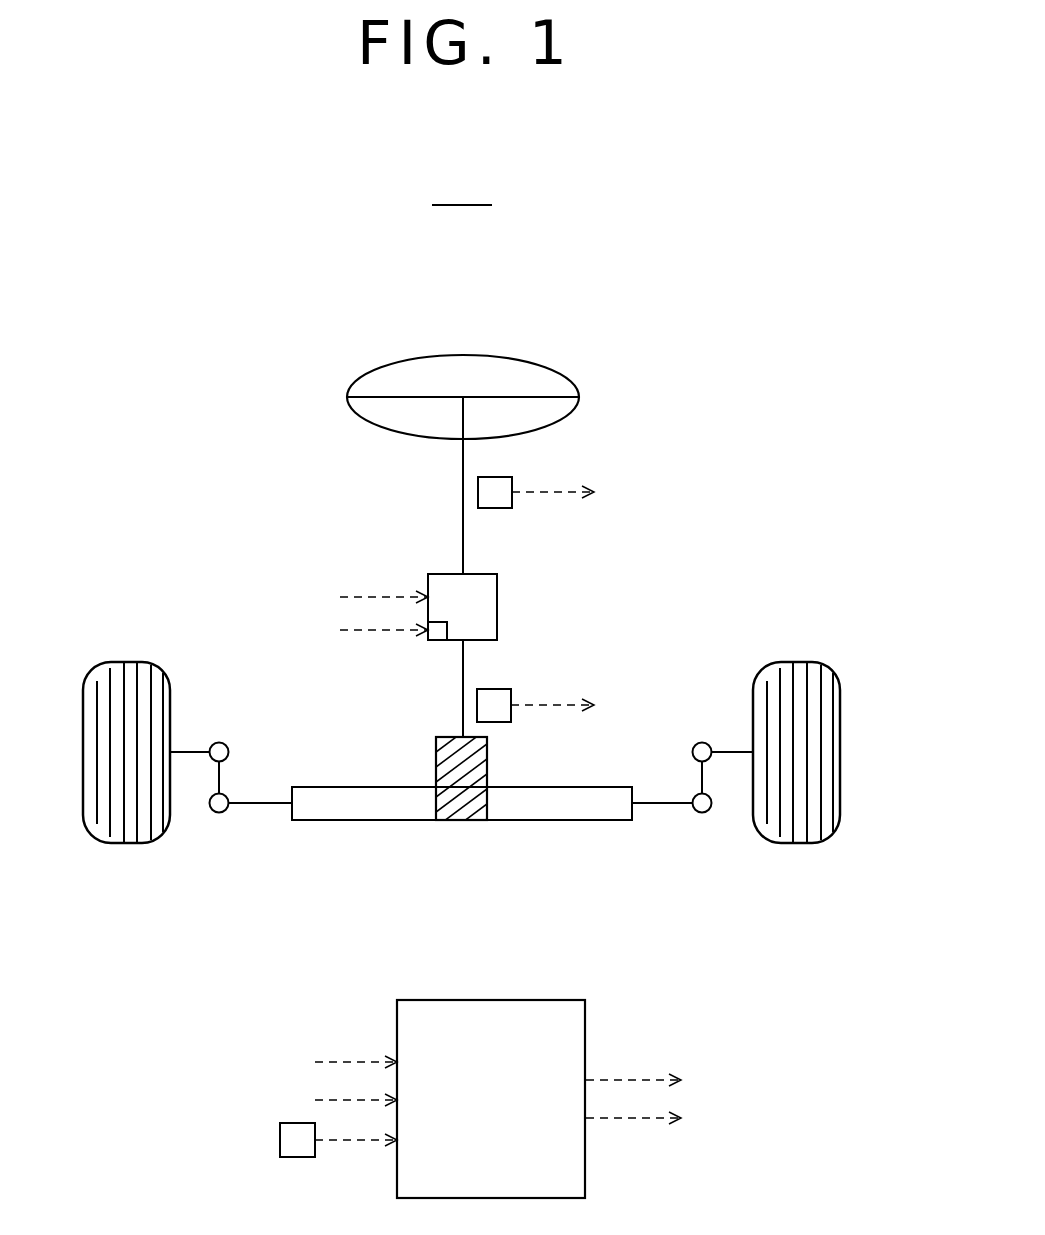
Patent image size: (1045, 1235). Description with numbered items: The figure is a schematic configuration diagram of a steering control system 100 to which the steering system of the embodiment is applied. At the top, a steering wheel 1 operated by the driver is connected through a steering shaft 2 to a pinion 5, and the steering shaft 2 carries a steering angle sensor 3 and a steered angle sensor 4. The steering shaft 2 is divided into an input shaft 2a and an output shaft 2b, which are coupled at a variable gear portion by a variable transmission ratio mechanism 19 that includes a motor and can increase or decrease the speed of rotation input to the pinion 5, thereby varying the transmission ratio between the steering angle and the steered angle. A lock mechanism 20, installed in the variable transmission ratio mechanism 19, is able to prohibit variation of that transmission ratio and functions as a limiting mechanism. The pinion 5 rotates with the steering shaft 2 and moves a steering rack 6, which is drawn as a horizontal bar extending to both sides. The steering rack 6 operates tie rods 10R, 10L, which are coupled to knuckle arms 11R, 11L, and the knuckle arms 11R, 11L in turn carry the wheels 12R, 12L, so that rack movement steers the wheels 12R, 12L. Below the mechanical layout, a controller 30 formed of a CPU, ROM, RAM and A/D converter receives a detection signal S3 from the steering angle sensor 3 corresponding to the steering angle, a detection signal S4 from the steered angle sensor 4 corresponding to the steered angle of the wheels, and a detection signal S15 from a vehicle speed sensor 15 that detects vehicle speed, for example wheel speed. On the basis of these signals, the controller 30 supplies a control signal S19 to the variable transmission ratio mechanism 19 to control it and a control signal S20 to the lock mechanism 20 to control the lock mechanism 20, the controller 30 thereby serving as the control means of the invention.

The steering control system 100 is at (462, 189).
The steering wheel 1 is at (463, 355).
The steering shaft 2 is at (427, 503).
The input shaft 2a is at (463, 538).
The output shaft 2b is at (462, 703).
The steering angle sensor 3 is at (500, 508).
The steered angle sensor 4 is at (500, 722).
The pinion 5 is at (478, 821).
The steering rack 6 is at (565, 821).
The tie rod 10L is at (262, 805).
The tie rod 10R is at (652, 805).
The knuckle arm 11L is at (187, 754).
The knuckle arm 11R is at (723, 754).
The wheel 12L is at (128, 660).
The wheel 12R is at (796, 660).
The vehicle speed sensor 15 is at (280, 1140).
The variable transmission ratio mechanism 19 is at (485, 585).
The lock mechanism 20 is at (431, 637).
The controller 30 is at (490, 1000).
The detection signal S3 is at (454, 777).
The detection signal S4 is at (454, 903).
The detection signal S15 is at (367, 1142).
The control signal S19 is at (515, 839).
The control signal S20 is at (515, 874).